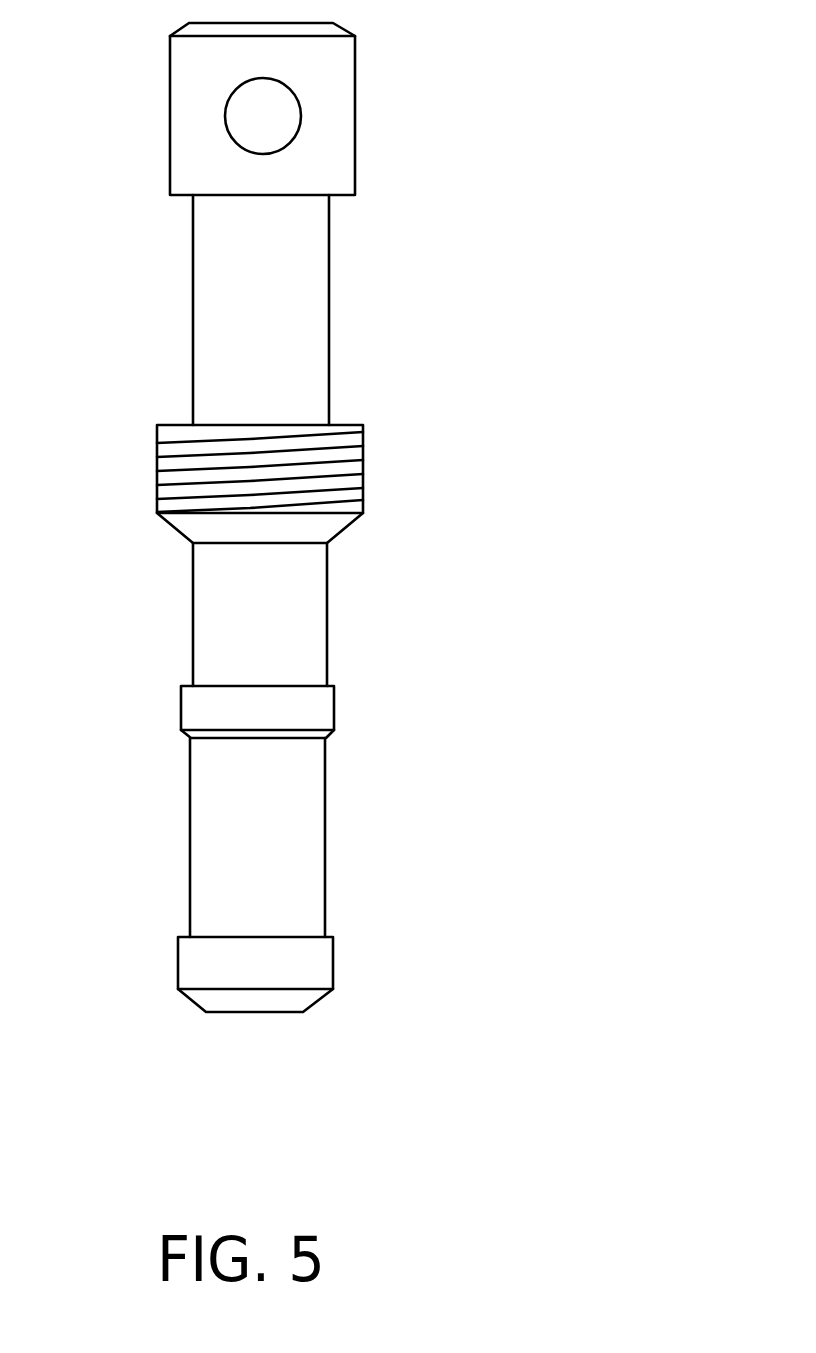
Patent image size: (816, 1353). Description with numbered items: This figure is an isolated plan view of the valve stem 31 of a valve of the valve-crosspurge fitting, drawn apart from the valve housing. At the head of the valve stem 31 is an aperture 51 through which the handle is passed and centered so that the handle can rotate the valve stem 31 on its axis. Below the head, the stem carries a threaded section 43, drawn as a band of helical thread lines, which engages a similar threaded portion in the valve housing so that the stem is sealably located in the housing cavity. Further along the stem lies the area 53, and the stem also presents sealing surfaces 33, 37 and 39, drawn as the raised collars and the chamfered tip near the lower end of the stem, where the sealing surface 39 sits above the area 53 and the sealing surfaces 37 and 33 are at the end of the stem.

The aperture 51 is at (302, 111).
The valve stem 31 is at (329, 343).
The threaded section 43 is at (363, 490).
The sealing surface 39 is at (335, 706).
The area 53 is at (189, 855).
The sealing surface 37 is at (333, 965).
The sealing surface 33 is at (195, 1000).